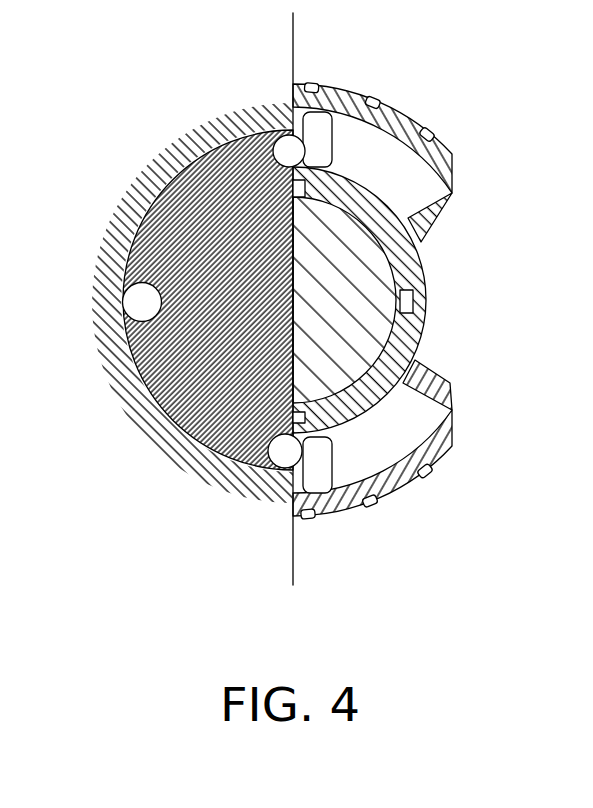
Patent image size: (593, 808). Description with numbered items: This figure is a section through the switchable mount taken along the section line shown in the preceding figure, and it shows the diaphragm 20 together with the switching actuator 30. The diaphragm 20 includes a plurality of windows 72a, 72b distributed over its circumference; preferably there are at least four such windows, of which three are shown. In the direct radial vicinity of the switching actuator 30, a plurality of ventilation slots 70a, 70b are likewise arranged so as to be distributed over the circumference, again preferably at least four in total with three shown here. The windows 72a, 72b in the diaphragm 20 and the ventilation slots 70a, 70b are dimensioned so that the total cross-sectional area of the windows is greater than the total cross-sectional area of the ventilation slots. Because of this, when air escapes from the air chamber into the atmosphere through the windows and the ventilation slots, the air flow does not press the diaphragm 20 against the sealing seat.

The diaphragm 20 is at (206, 422).
The switching actuator 30 is at (367, 327).
The ventilation slot 70a is at (333, 495).
The ventilation slot 70b is at (330, 168).
The window 72a is at (233, 492).
The window 72b is at (258, 133).